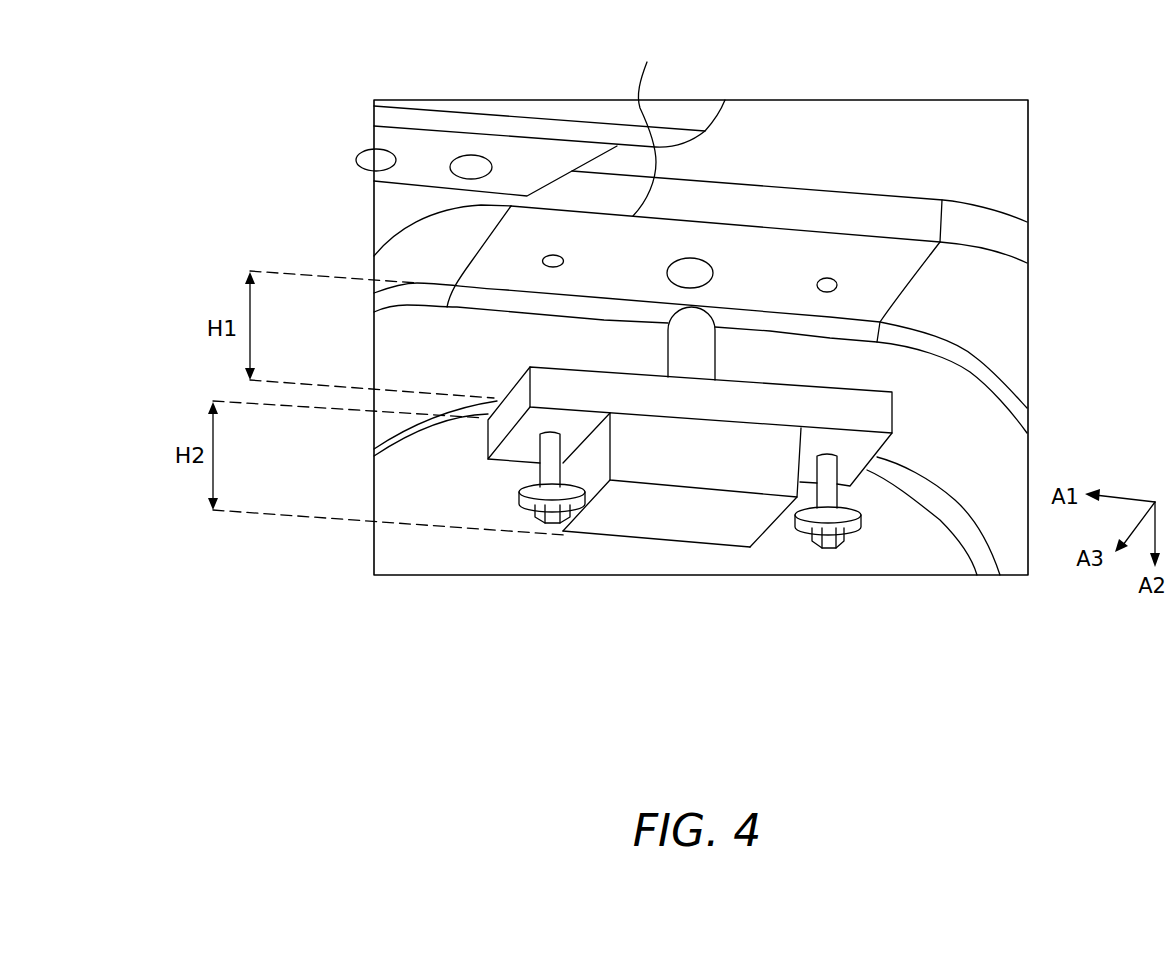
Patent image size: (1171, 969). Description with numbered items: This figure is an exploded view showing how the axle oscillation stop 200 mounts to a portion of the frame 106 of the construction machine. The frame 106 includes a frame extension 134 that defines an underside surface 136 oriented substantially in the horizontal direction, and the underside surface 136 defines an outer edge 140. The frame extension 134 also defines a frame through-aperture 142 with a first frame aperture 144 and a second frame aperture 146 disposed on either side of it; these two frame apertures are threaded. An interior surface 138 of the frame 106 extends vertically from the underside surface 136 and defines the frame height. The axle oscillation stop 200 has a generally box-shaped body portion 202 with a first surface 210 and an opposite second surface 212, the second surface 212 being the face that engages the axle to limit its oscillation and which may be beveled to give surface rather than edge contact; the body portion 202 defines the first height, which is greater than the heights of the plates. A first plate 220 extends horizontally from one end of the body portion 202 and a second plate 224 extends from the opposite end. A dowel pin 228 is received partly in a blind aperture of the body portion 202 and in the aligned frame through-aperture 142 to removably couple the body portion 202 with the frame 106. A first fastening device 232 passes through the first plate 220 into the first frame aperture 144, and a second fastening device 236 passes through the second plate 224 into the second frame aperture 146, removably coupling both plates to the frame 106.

The frame 106 is at (1058, 136).
The frame extension 134 is at (863, 210).
The underside surface 136 is at (907, 253).
The interior surface 138 is at (393, 357).
The outer edge 140 is at (555, 172).
The frame through-aperture 142 is at (700, 295).
The first frame aperture 144 is at (829, 300).
The second frame aperture 146 is at (551, 275).
The axle oscillation stop 200 is at (597, 560).
The body portion 202 is at (712, 560).
The first surface 210 is at (633, 373).
The second surface 212 is at (657, 527).
The first plate 220 is at (855, 457).
The second plate 224 is at (510, 452).
The dowel pin 228 is at (697, 352).
The first fastening device 232 is at (828, 548).
The second fastening device 236 is at (552, 523).